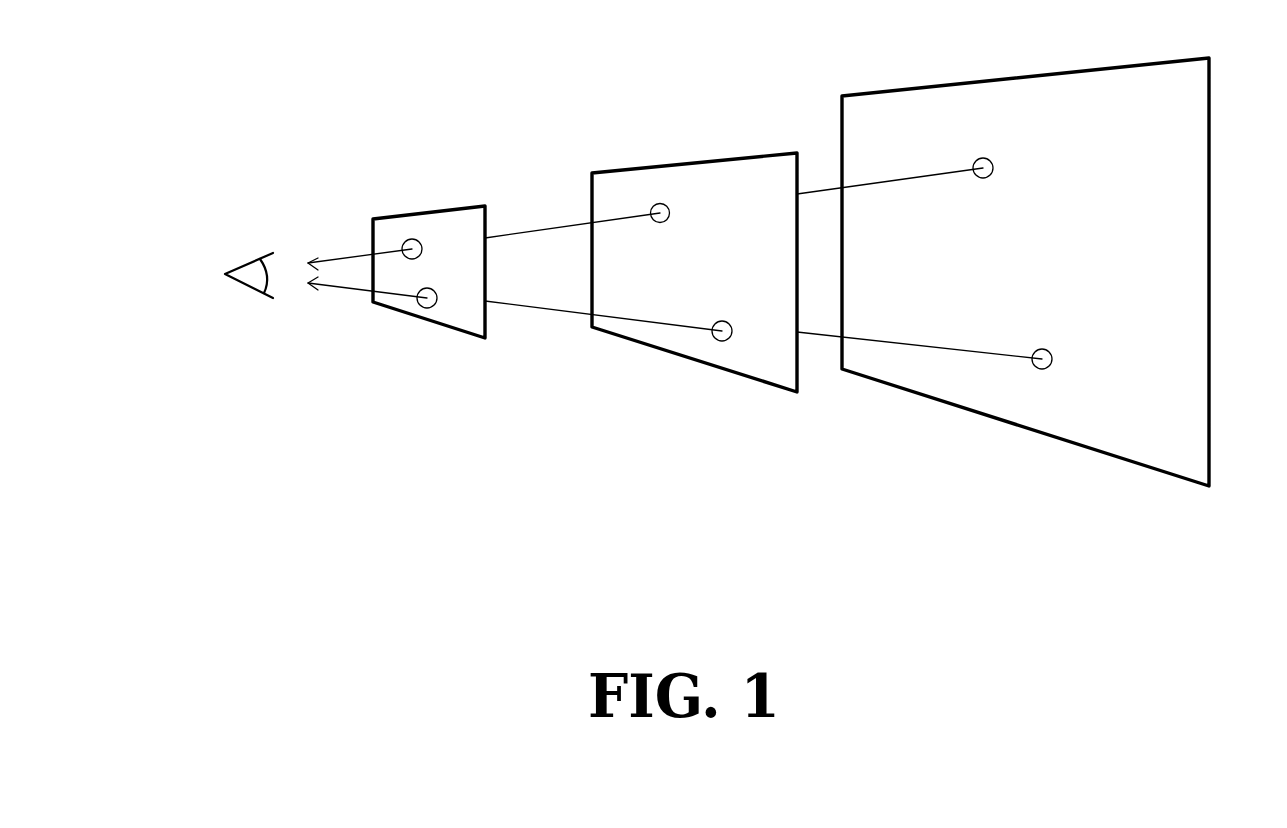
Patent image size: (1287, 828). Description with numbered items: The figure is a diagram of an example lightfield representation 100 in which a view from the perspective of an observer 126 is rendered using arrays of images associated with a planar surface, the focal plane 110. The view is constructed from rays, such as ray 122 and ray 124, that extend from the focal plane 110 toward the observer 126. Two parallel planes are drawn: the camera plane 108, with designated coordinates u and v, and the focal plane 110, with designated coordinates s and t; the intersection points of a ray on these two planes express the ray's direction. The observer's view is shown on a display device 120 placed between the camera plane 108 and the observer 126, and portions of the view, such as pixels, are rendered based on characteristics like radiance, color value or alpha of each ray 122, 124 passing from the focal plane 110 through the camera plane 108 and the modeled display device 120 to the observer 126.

The light field display system 100 is at (600, 80).
The camera plane 108 is at (693, 360).
The focal plane 110 is at (990, 79).
The display device 120 is at (453, 330).
The ray 122 is at (542, 225).
The ray 124 is at (530, 307).
The observer 126 is at (245, 245).